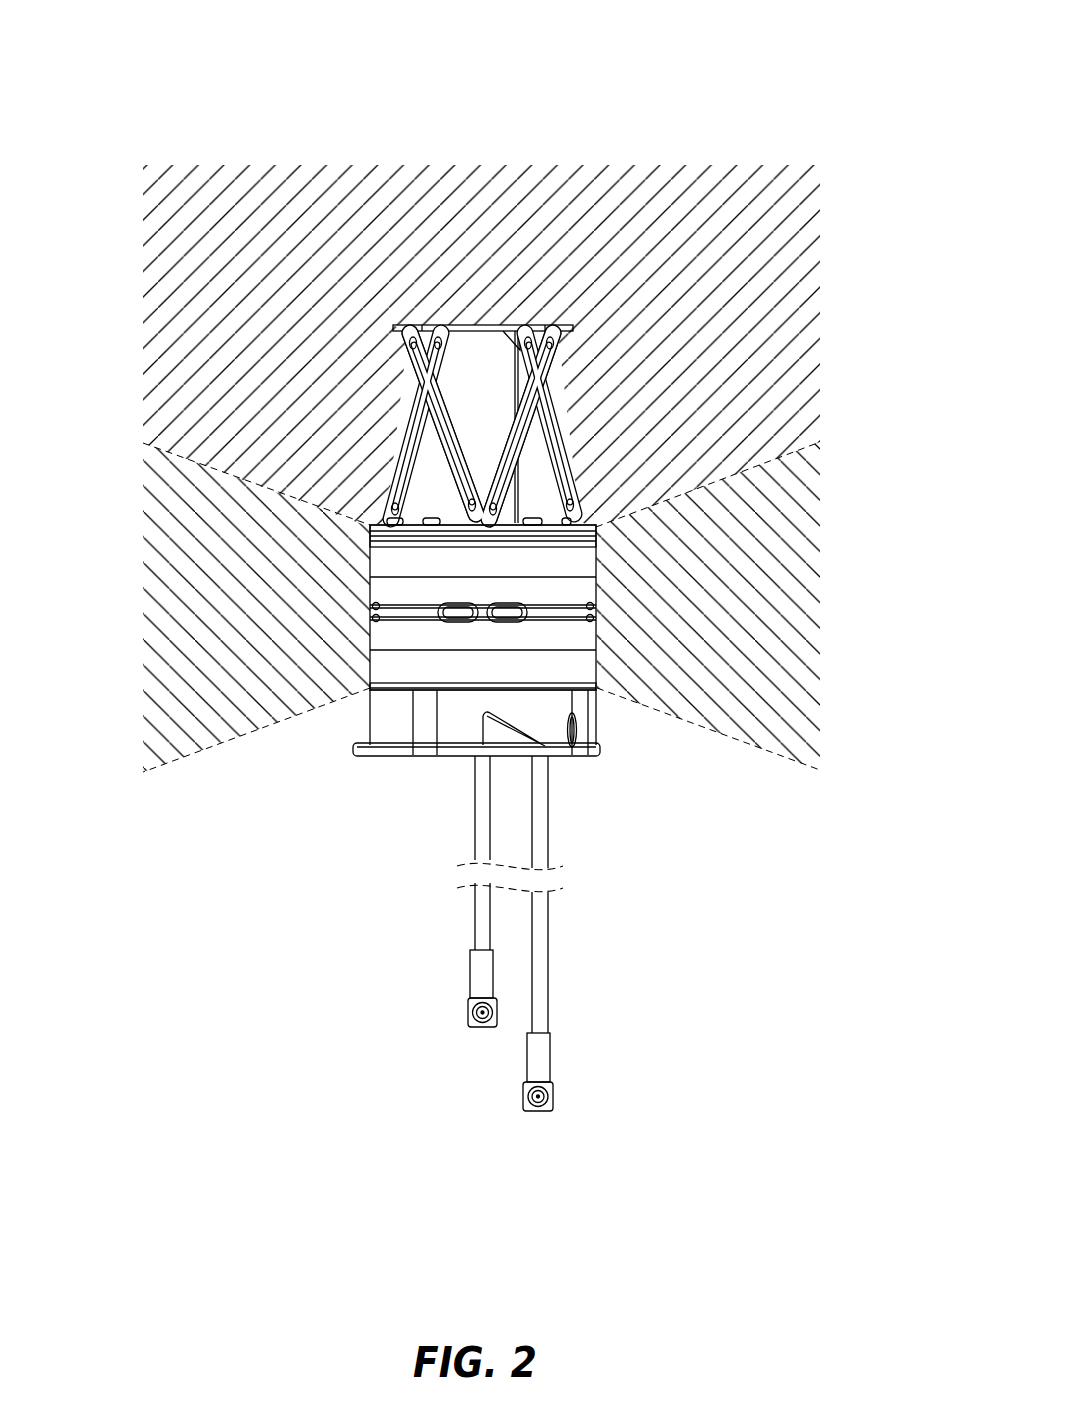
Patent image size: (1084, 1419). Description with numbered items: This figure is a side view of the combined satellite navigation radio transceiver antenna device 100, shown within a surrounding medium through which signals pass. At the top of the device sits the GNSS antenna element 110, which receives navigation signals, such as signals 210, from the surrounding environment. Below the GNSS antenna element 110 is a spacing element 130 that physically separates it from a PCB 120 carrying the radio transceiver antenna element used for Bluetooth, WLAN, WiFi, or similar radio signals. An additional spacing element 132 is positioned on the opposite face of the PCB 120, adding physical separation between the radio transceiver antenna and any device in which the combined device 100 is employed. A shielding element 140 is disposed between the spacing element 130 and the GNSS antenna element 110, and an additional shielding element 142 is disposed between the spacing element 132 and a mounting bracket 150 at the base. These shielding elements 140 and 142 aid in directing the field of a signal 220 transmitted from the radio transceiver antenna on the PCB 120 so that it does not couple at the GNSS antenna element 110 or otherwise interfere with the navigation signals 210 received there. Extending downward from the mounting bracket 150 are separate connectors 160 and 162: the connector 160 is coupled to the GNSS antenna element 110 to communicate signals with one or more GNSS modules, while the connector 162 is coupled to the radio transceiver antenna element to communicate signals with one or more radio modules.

The combined satellite navigation radio transceiver antenna device 100 is at (230, 97).
The GNSS antenna element 110 is at (557, 310).
The PCB 120 is at (597, 613).
The spacing element 130 is at (531, 672).
The additional spacing element 132 is at (597, 715).
The shielding element 140 is at (368, 537).
The additional shielding element 142 is at (370, 687).
The mounting bracket 150 is at (563, 756).
The connector 160 is at (477, 968).
The connector 162 is at (545, 1045).
The signals 210 is at (778, 187).
The signal 220 is at (807, 653).